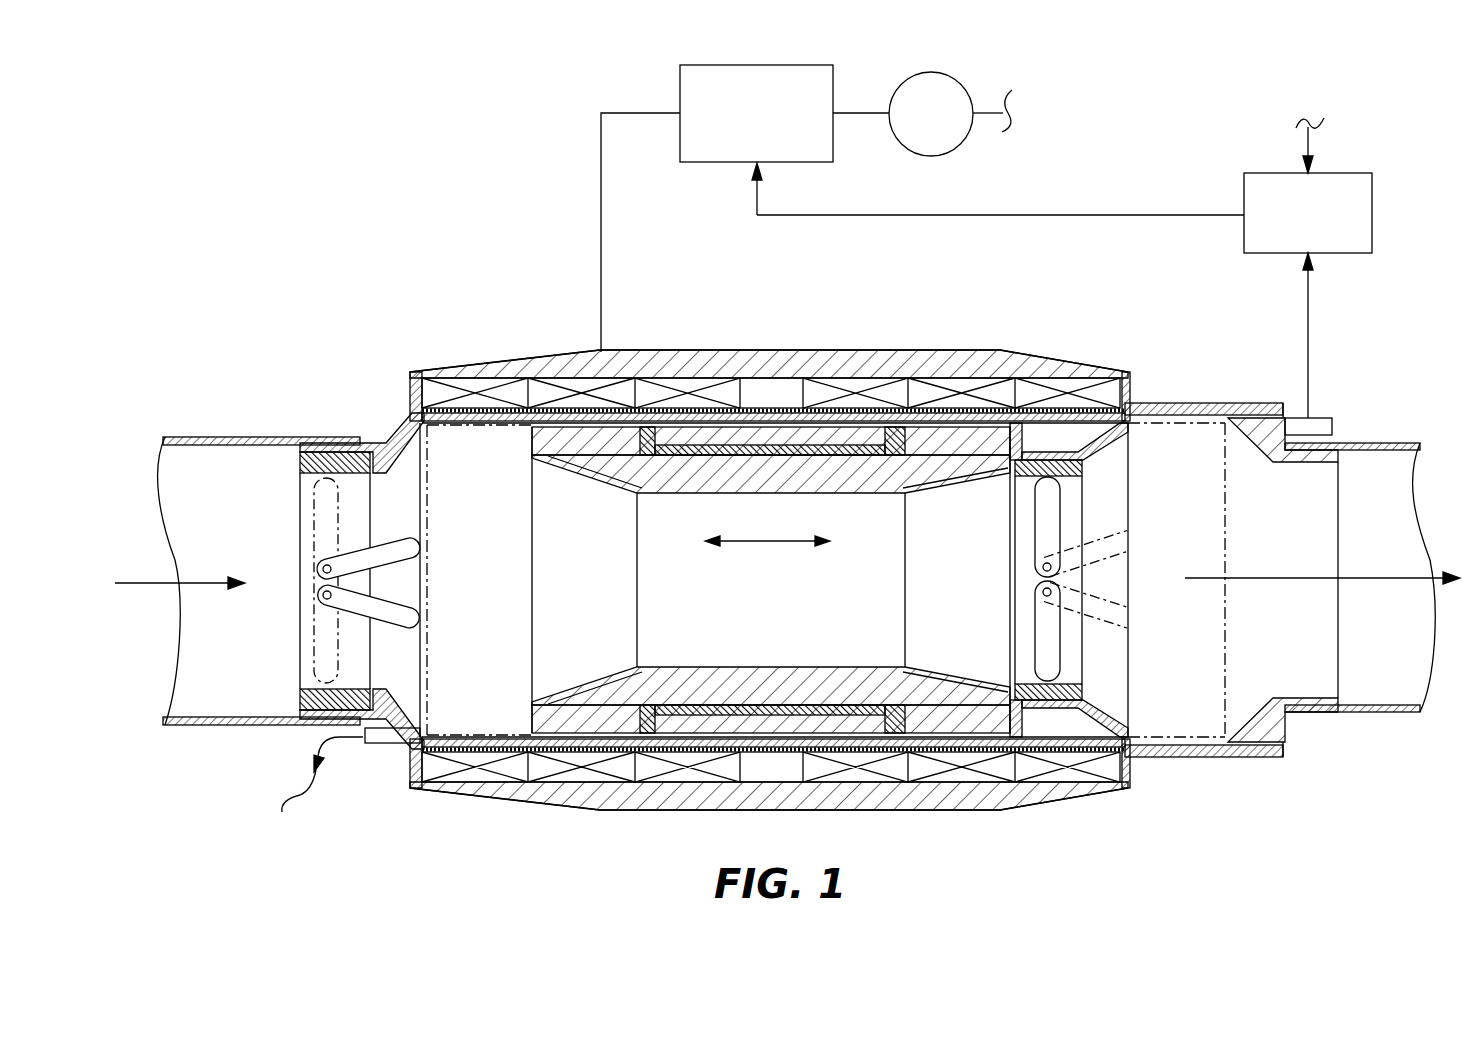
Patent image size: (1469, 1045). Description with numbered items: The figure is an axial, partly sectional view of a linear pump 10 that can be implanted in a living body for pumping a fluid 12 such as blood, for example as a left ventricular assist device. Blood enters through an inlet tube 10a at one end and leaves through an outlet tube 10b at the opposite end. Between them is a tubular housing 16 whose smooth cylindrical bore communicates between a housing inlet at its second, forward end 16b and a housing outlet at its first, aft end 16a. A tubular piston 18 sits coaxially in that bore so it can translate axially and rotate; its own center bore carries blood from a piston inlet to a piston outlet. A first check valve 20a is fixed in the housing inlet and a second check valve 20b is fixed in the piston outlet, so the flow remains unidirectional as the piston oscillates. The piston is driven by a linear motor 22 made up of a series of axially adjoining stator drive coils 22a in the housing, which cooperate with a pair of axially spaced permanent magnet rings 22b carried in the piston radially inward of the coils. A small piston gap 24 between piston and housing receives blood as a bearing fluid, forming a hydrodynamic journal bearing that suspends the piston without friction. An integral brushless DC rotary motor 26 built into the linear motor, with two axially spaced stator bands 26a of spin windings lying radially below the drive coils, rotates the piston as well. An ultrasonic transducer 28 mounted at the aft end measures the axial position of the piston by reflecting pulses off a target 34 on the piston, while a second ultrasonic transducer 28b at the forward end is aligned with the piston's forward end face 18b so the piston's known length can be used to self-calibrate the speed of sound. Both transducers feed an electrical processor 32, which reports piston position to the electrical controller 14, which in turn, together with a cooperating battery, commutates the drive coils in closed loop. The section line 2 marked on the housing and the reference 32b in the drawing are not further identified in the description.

The section line 2- 2 is at (965, 342).
The linear pump 10 is at (957, 288).
The inlet tube 10a is at (255, 437).
The outlet tube 10b is at (1374, 715).
The fluid 12 is at (195, 580).
The electrical controller 14 is at (757, 65).
The tubular housing 16 is at (1068, 345).
The first aft end of housing 16a is at (1283, 402).
The second forward end of housing 16b is at (408, 452).
The piston 18 is at (756, 592).
The forward end face of piston 18b is at (530, 710).
The first check valve 20a is at (300, 648).
The second check valve 20b is at (1082, 662).
The linear motor 22 is at (1048, 782).
The stator drive coils 22a is at (864, 388).
The permanent magnet rings 22b is at (568, 438).
The gap 24 is at (525, 428).
The brushless DC rotary motor 26 is at (978, 385).
The stator bands 26a is at (448, 372).
The ultrasonic transducer 28 is at (1322, 405).
The second ultrasonic transducer 28b is at (382, 743).
The electrical processor 32 is at (1341, 173).
The permanent magnet 32b is at (689, 440).
The target 34 is at (1130, 445).